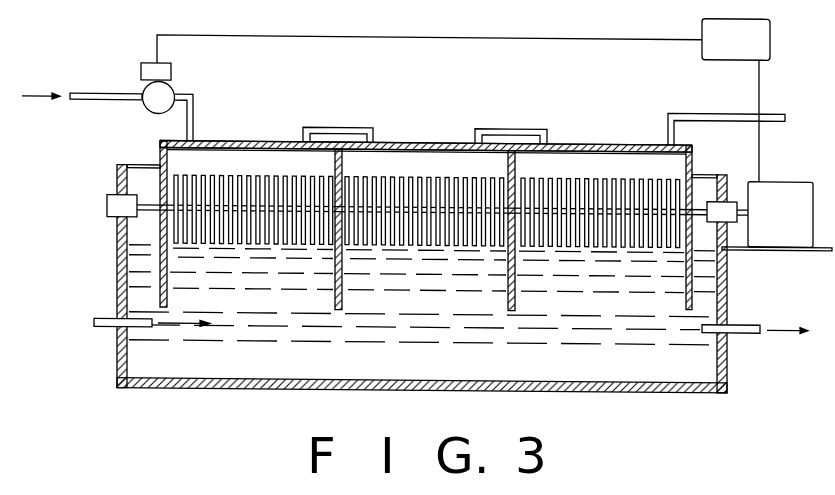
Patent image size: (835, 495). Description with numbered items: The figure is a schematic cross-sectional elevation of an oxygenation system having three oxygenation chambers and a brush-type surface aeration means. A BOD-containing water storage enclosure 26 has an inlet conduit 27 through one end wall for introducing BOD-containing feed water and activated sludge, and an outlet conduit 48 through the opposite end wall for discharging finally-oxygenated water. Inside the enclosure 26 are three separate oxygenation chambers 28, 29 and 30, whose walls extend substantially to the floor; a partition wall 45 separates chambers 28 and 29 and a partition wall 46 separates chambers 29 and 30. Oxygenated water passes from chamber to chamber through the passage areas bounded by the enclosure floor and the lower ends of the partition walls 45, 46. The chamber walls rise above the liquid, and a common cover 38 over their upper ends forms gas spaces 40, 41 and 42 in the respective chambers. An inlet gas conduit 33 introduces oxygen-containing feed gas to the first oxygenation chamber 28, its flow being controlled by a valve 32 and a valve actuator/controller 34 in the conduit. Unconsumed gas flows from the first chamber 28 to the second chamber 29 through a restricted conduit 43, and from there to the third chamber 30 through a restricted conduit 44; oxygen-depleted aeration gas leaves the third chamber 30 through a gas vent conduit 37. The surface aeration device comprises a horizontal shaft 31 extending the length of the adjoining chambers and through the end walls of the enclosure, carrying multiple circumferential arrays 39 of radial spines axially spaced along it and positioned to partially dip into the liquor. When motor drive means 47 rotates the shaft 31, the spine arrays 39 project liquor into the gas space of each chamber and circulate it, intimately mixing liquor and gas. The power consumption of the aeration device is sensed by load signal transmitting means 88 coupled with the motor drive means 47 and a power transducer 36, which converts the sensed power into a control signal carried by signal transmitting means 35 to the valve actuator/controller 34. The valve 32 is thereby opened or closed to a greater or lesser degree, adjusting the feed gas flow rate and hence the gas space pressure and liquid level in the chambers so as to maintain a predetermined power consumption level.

The BOD-containing water storage enclosure 26 is at (222, 388).
The inlet conduit 27 is at (103, 318).
The first oxygenation chamber 28 is at (251, 283).
The second oxygenation chamber 29 is at (425, 284).
The third oxygenation chamber 30 is at (600, 286).
The horizontal shaft 31 is at (125, 218).
The valve 32 is at (146, 108).
The inlet gas conduit 33 is at (97, 94).
The valve actuator/controller 34 is at (172, 72).
The signal transmitting means 35 is at (350, 35).
The power transducer 36 is at (700, 45).
The gas vent conduit 37 is at (748, 108).
The common cover 38 is at (287, 141).
The circumferential arrays of radial spines 39 is at (247, 185).
The gas space 40 is at (262, 156).
The gas space 41 is at (425, 152).
The gas space 42 is at (601, 148).
The restricted conduit 43 is at (353, 127).
The restricted conduit 44 is at (509, 125).
The partition wall 45 is at (344, 163).
The partition wall 46 is at (517, 161).
The motor drive means 47 is at (772, 233).
The outlet conduit 48 is at (740, 328).
The load signal transmitting means 88 is at (762, 85).